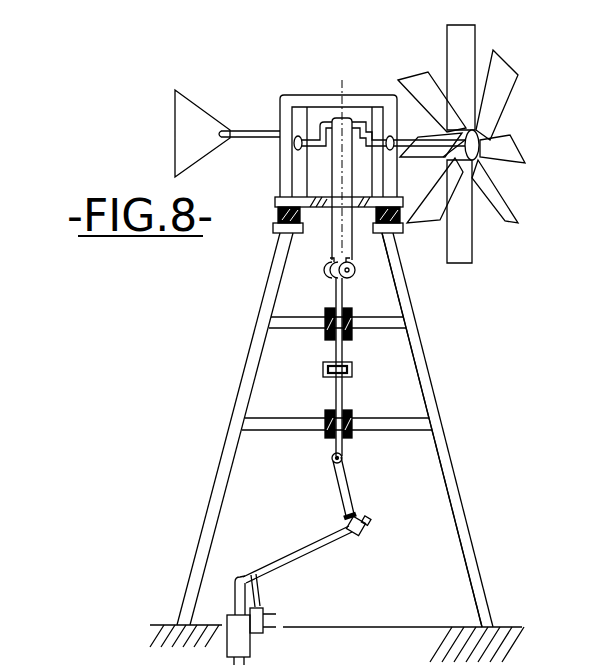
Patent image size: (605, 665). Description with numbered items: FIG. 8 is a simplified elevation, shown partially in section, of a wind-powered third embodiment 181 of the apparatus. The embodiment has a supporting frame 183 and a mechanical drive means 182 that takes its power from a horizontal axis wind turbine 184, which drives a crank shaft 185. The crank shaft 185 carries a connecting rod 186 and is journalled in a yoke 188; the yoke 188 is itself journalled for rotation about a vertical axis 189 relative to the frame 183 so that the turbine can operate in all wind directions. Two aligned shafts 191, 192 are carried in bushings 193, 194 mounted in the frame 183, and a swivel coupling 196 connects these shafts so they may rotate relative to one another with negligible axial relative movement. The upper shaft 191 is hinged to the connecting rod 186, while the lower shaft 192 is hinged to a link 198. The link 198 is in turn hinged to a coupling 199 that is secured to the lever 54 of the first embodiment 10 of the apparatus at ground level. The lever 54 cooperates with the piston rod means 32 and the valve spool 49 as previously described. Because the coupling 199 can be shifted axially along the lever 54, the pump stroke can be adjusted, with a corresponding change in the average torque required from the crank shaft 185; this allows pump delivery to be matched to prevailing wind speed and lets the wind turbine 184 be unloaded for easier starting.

The first embodiment 10 is at (209, 616).
The piston rod means 32 is at (233, 604).
The valve spool 49 is at (264, 600).
The lever 54 is at (293, 553).
The third embodiment 181 is at (321, 79).
The mechanical drive means 182 is at (381, 272).
The supporting frame 183 is at (411, 300).
The horizontal axis wind turbine 184 is at (475, 240).
The crank shaft 185 is at (430, 139).
The connecting rod 186 is at (328, 258).
The yoke 188 is at (285, 95).
The vertical axis 189 is at (342, 82).
The shaft 191 is at (344, 284).
The shaft 192 is at (343, 390).
The bushing 193 is at (353, 316).
The bushing 194 is at (353, 418).
The swivel coupling 196 is at (353, 368).
The link 198 is at (351, 487).
The coupling 199 is at (374, 530).